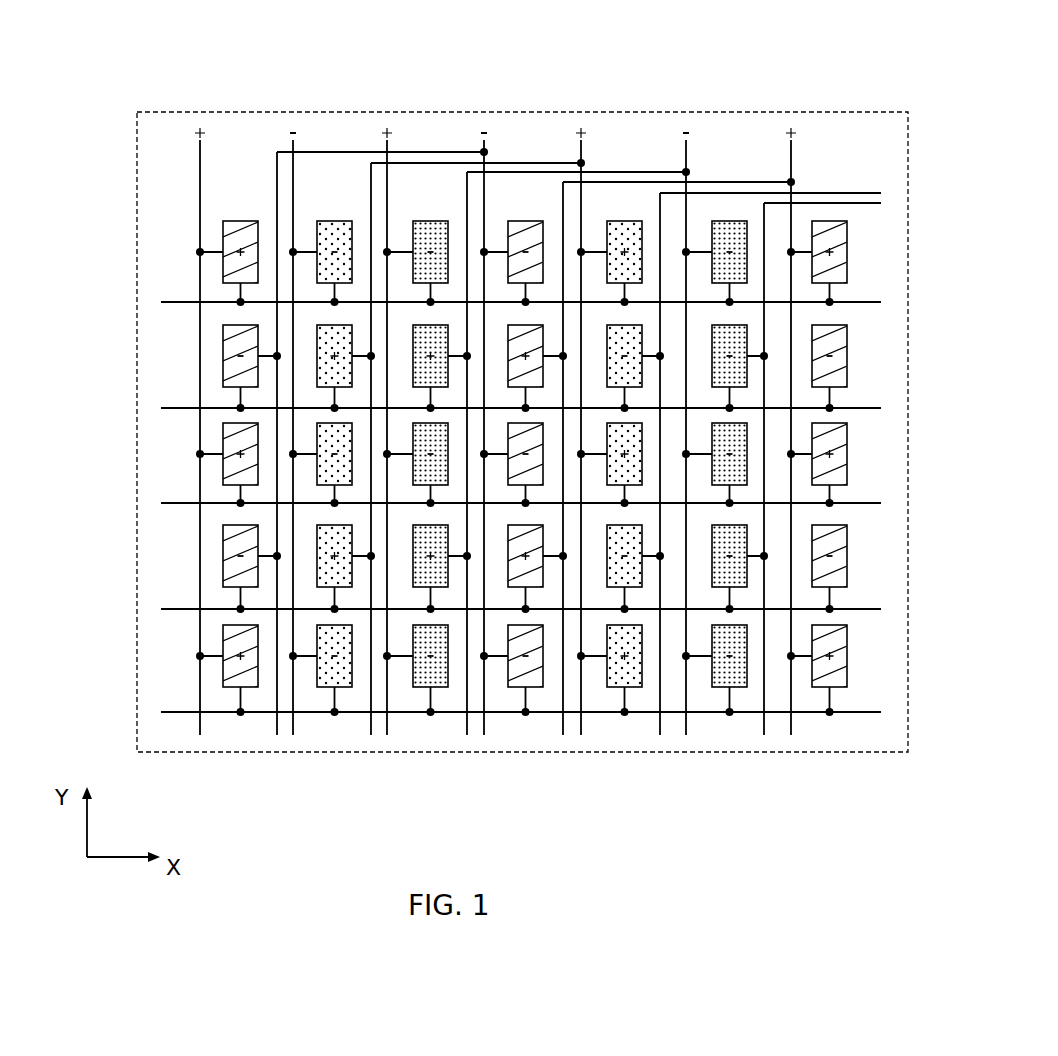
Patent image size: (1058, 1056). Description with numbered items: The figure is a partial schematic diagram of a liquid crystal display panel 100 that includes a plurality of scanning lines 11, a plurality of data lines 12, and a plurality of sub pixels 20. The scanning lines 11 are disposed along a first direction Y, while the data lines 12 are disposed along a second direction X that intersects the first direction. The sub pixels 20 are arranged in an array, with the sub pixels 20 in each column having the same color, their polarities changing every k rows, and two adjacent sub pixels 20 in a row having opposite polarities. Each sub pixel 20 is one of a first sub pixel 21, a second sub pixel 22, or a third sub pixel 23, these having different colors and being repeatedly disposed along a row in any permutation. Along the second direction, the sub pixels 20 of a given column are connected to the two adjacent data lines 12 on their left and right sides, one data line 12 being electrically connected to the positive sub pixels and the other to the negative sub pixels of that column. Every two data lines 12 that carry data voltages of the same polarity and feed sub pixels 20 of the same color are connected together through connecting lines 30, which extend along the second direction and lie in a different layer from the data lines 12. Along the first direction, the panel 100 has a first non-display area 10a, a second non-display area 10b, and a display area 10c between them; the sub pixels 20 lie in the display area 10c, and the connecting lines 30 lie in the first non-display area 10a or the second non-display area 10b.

The liquid crystal display panel 100 is at (152, 68).
The first non-display area 10a is at (144, 138).
The second non-display area 10b is at (144, 405).
The display area 10c is at (144, 740).
The scanning lines 11 is at (879, 408).
The data lines 12 is at (791, 152).
The connecting lines 30 is at (343, 152).
The sub pixels 20 is at (521, 505).
The first sub pixel 21 is at (248, 677).
The second sub pixel 22 is at (340, 678).
The third sub pixel 23 is at (435, 678).